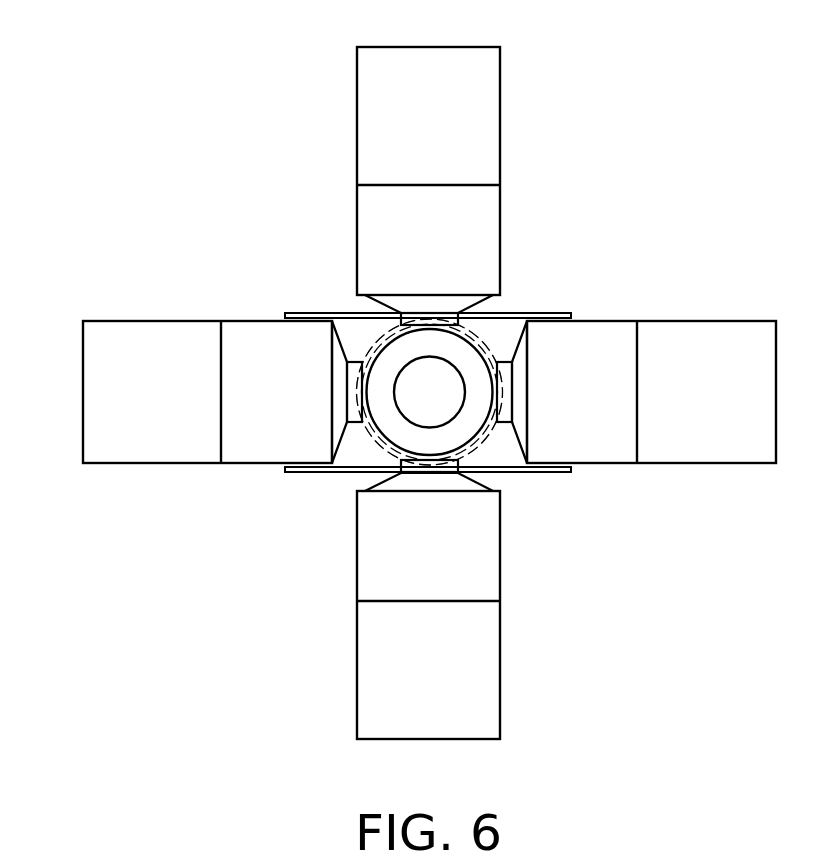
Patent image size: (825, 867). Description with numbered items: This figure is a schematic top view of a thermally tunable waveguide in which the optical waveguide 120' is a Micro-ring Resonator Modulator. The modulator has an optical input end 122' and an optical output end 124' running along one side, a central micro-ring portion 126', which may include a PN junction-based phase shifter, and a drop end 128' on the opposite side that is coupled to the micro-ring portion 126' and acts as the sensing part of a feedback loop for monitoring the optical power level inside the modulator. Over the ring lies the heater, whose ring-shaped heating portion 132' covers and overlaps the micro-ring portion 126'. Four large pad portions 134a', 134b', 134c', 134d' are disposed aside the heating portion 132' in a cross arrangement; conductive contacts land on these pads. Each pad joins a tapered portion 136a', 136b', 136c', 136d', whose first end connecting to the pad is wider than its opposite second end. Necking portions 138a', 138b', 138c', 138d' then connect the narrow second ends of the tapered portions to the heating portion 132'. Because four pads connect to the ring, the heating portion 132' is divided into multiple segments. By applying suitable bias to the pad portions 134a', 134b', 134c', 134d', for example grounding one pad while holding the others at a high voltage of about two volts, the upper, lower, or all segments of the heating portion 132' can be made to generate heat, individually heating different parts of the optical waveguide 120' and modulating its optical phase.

The optical waveguide 120' is at (575, 535).
The optical input end 122' is at (392, 293).
The optical output end 124' is at (457, 295).
The micro-ring portion 126' is at (367, 345).
The drop end 128' is at (428, 501).
The heating portion 132' is at (399, 340).
The pad portion 134a' is at (477, 171).
The pad portion 134b' is at (651, 423).
The pad portion 134c' is at (479, 615).
The pad portion 134d' is at (207, 423).
The tapered portion 136a' is at (474, 282).
The tapered portion 136b' is at (571, 441).
The tapered portion 136c' is at (480, 572).
The tapered portion 136d' is at (290, 438).
The necking portion 138a' is at (492, 271).
The necking portion 138b' is at (596, 475).
The necking portion 138c' is at (498, 586).
The necking portion 138d' is at (264, 474).